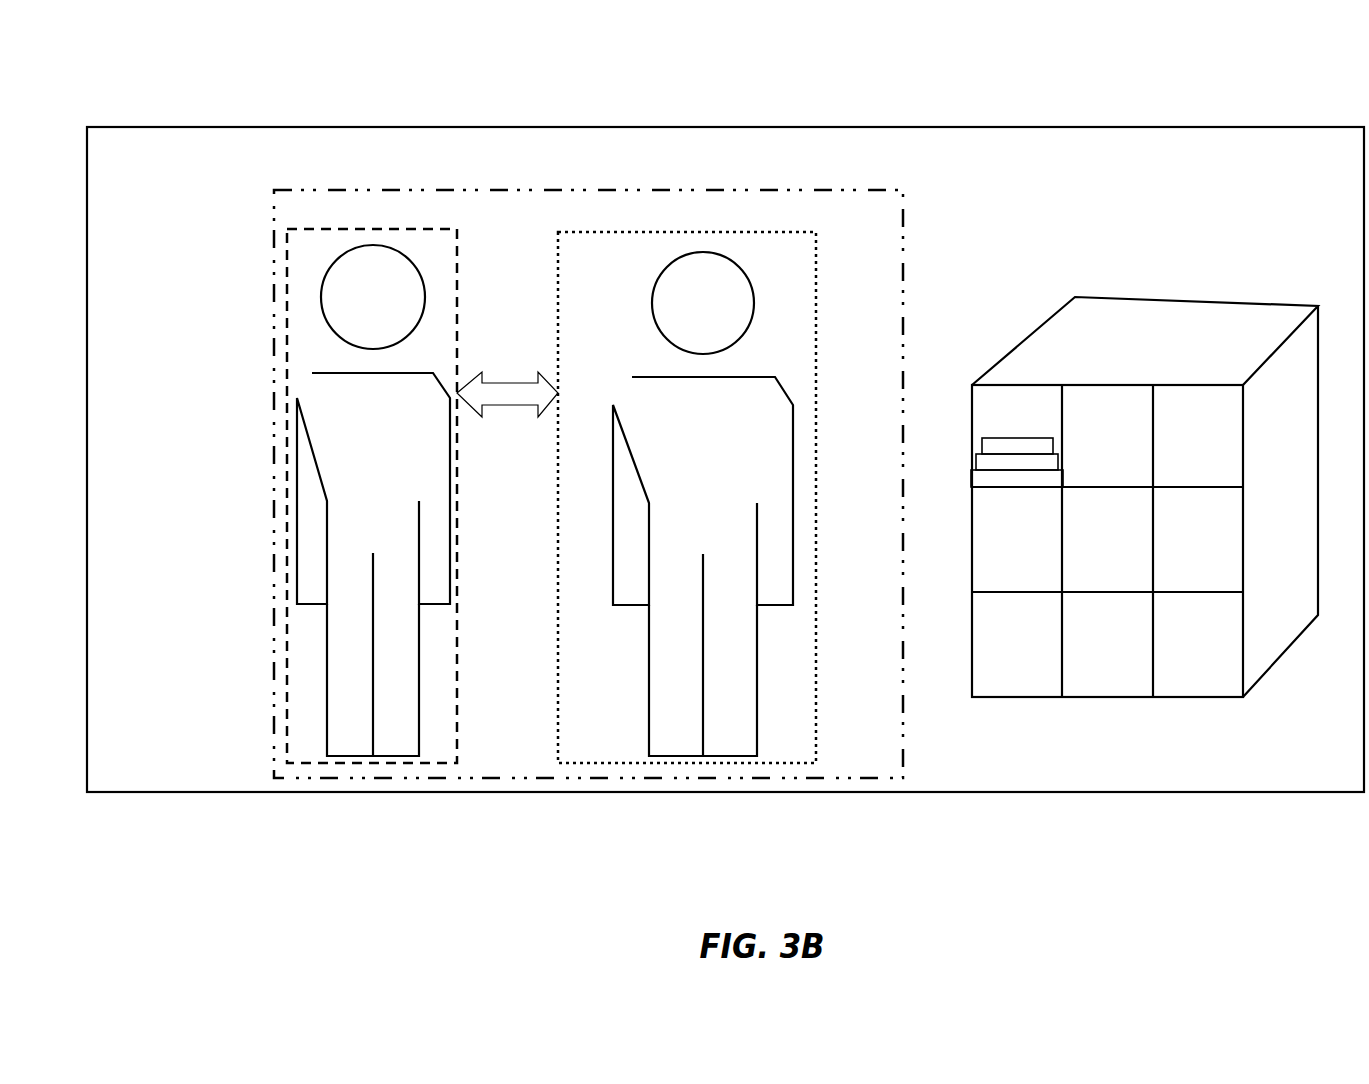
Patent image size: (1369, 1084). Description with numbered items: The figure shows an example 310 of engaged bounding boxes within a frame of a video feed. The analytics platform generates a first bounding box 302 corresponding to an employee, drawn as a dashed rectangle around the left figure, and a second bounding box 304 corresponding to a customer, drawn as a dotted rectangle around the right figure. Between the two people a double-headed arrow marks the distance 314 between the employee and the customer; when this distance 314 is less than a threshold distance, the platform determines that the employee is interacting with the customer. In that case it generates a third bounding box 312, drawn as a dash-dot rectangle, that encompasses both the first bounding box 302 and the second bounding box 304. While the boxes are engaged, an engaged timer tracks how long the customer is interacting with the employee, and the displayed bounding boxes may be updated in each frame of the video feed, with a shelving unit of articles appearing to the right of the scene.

The example of engaged bounding boxes 310 is at (77, 100).
The third bounding box 312 is at (752, 190).
The first bounding box 302 is at (330, 758).
The second bounding box 304 is at (590, 758).
The distance 314 is at (497, 382).